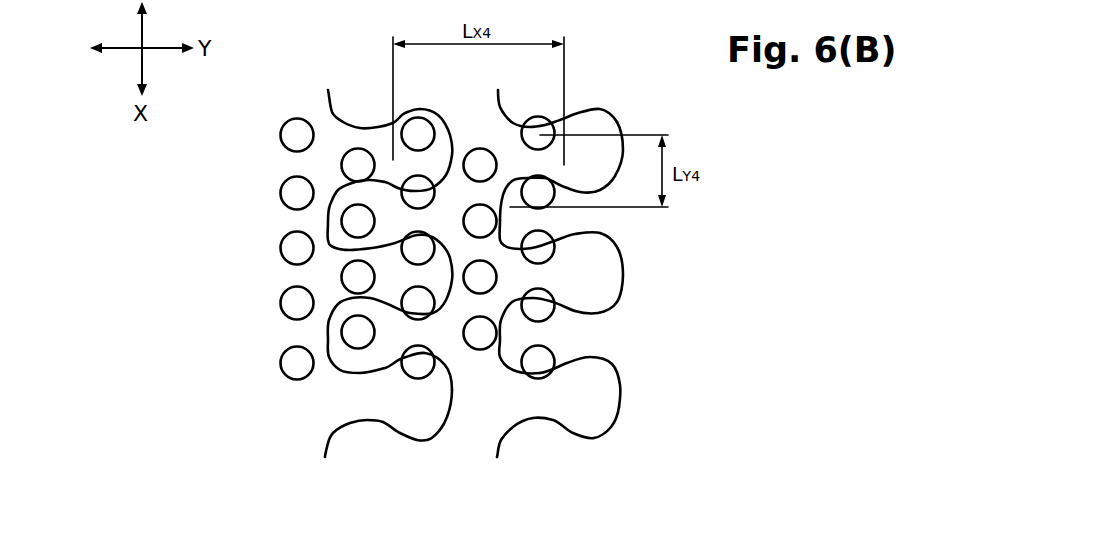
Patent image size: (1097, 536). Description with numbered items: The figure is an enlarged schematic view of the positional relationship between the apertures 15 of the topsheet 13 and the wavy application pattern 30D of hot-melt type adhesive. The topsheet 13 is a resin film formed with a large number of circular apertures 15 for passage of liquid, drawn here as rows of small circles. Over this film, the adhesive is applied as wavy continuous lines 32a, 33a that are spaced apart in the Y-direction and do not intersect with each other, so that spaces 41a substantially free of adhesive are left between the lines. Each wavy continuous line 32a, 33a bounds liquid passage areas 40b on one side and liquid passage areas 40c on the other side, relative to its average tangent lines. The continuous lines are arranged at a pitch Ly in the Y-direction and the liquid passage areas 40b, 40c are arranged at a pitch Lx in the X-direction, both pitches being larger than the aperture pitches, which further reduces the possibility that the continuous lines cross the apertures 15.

The topsheet 13 is at (307, 332).
The apertures 15 is at (288, 249).
The application pattern 30D is at (552, 280).
The wavy continuous line 32a is at (393, 124).
The wavy continuous line 33a is at (590, 112).
The liquid passage areas 40b is at (597, 273).
The liquid passage areas 40c is at (572, 334).
The spaces 41a is at (482, 410).